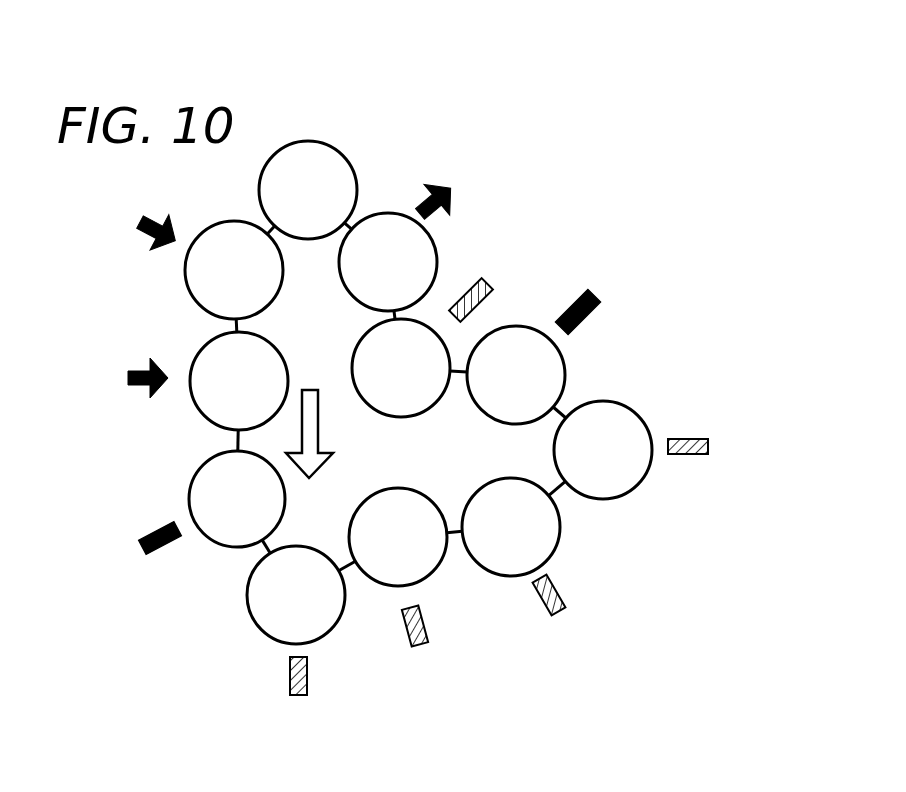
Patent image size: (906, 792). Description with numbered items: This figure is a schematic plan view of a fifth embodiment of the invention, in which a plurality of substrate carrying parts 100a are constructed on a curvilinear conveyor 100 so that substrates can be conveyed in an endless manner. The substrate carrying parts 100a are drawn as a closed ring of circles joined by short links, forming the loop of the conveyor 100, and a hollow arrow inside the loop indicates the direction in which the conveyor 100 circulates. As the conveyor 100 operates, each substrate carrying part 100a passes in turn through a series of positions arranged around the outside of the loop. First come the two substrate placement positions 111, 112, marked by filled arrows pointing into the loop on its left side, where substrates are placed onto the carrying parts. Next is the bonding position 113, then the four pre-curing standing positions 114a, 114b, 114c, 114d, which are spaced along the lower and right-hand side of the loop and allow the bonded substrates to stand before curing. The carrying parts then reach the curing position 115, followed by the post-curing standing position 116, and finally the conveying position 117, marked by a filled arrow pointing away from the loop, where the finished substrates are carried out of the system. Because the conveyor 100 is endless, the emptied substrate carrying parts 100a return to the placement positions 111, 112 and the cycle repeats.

The curvilinear conveyor 100 is at (583, 385).
The substrate carrying part 100a is at (322, 158).
The substrate placement position 111 is at (137, 224).
The substrate placement position 112 is at (118, 378).
The bonding position 113 is at (137, 551).
The pre-curing standing position 114a is at (297, 692).
The pre-curing standing position 114b is at (432, 644).
The pre-curing standing position 114c is at (569, 612).
The pre-curing standing position 114d is at (724, 448).
The curing position 115 is at (598, 304).
The post-curing standing position 116 is at (491, 290).
The conveying position 117 is at (455, 195).